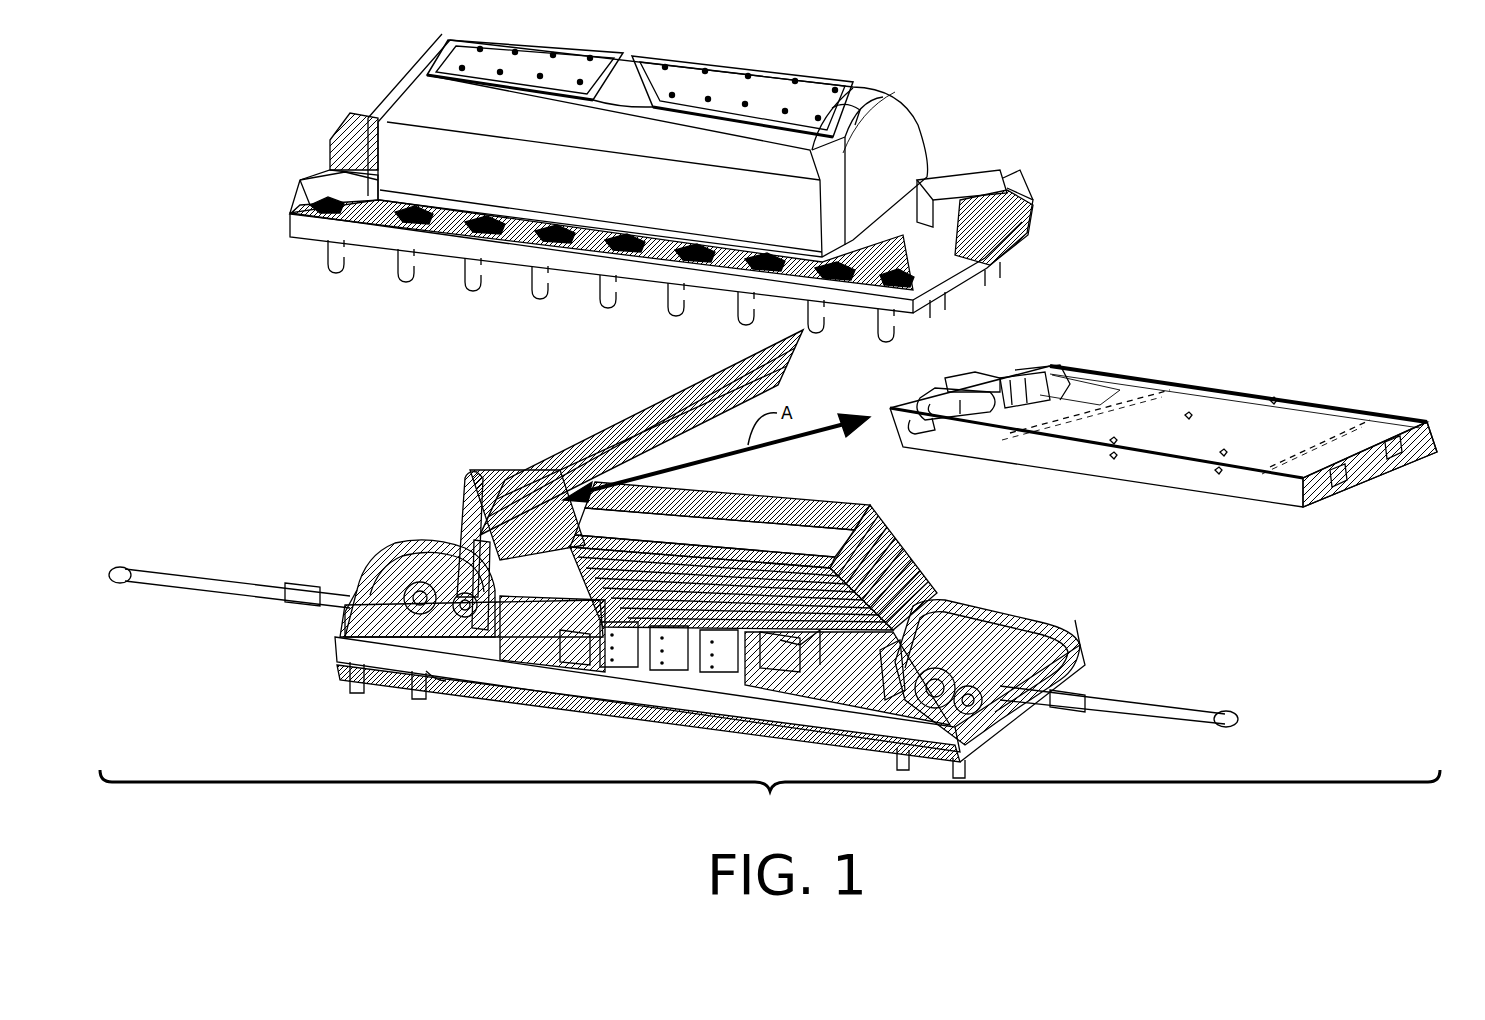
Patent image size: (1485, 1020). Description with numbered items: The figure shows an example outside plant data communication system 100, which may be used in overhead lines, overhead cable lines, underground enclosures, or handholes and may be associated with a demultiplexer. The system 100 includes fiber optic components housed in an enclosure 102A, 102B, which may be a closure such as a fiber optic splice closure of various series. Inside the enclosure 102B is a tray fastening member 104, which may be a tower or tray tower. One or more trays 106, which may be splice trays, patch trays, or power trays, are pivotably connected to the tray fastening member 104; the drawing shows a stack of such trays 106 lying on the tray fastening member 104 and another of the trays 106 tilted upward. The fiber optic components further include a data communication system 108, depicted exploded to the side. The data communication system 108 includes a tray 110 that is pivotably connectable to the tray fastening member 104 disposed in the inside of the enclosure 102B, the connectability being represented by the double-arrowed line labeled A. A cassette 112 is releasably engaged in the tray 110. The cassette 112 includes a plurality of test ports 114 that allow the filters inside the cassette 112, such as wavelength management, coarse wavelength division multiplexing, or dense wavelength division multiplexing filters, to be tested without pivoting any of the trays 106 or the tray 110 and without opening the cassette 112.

The outside plant data communication system 100 is at (770, 795).
The enclosure 102A is at (320, 128).
The enclosure 102B is at (378, 542).
The tray fastening member 104 is at (500, 482).
The trays 106 is at (775, 372).
The data communication system 108 is at (1181, 428).
The tray 110 is at (1228, 492).
The cassette 112 is at (1228, 432).
The test ports 114 is at (1350, 486).